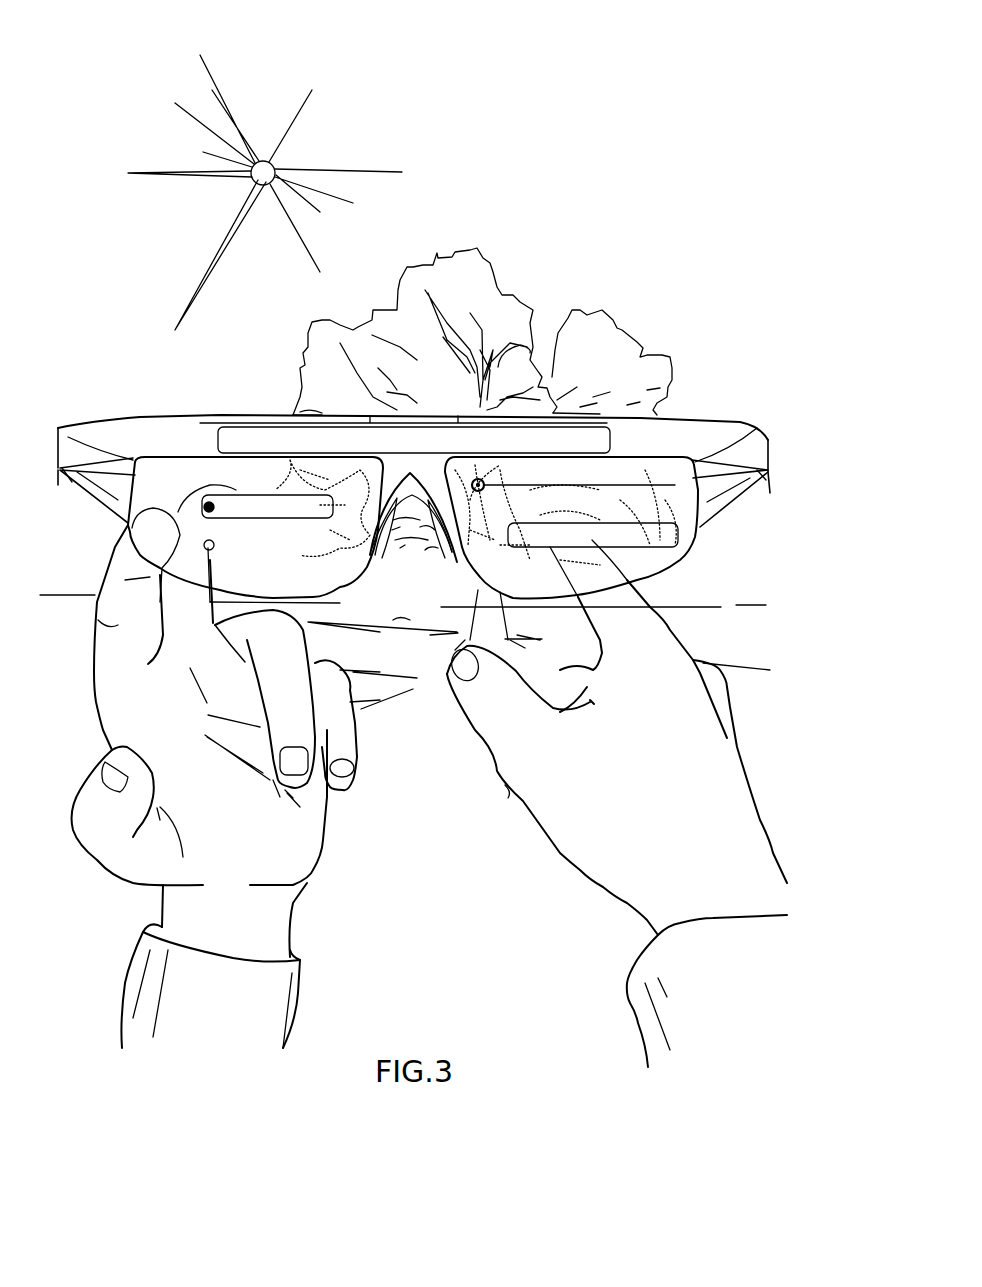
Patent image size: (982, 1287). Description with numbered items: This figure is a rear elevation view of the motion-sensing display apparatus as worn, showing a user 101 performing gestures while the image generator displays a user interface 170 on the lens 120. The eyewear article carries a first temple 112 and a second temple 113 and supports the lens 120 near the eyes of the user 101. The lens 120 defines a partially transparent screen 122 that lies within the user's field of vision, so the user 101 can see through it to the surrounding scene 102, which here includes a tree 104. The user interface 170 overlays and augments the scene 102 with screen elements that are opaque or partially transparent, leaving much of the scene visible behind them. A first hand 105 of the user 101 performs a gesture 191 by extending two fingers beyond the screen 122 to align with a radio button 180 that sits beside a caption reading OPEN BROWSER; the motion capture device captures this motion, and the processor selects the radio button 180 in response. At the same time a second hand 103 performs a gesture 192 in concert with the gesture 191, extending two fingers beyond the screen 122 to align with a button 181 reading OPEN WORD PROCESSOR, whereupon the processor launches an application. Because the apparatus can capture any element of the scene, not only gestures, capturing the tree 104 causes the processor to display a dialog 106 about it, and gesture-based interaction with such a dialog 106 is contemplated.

The user 101 is at (101, 706).
The scene 102 is at (503, 634).
The second hand 103 is at (730, 755).
The tree 104 is at (487, 253).
The first hand 105 is at (318, 843).
The dialog 106 is at (617, 468).
The first temple 112 is at (89, 490).
The second temple 113 is at (739, 493).
The lens 120 is at (324, 593).
The screen 122 is at (170, 458).
The user interface 170 is at (217, 470).
The radio button 180 is at (200, 502).
The button 181 is at (533, 528).
The gesture 191 is at (105, 907).
The gesture 192 is at (582, 907).